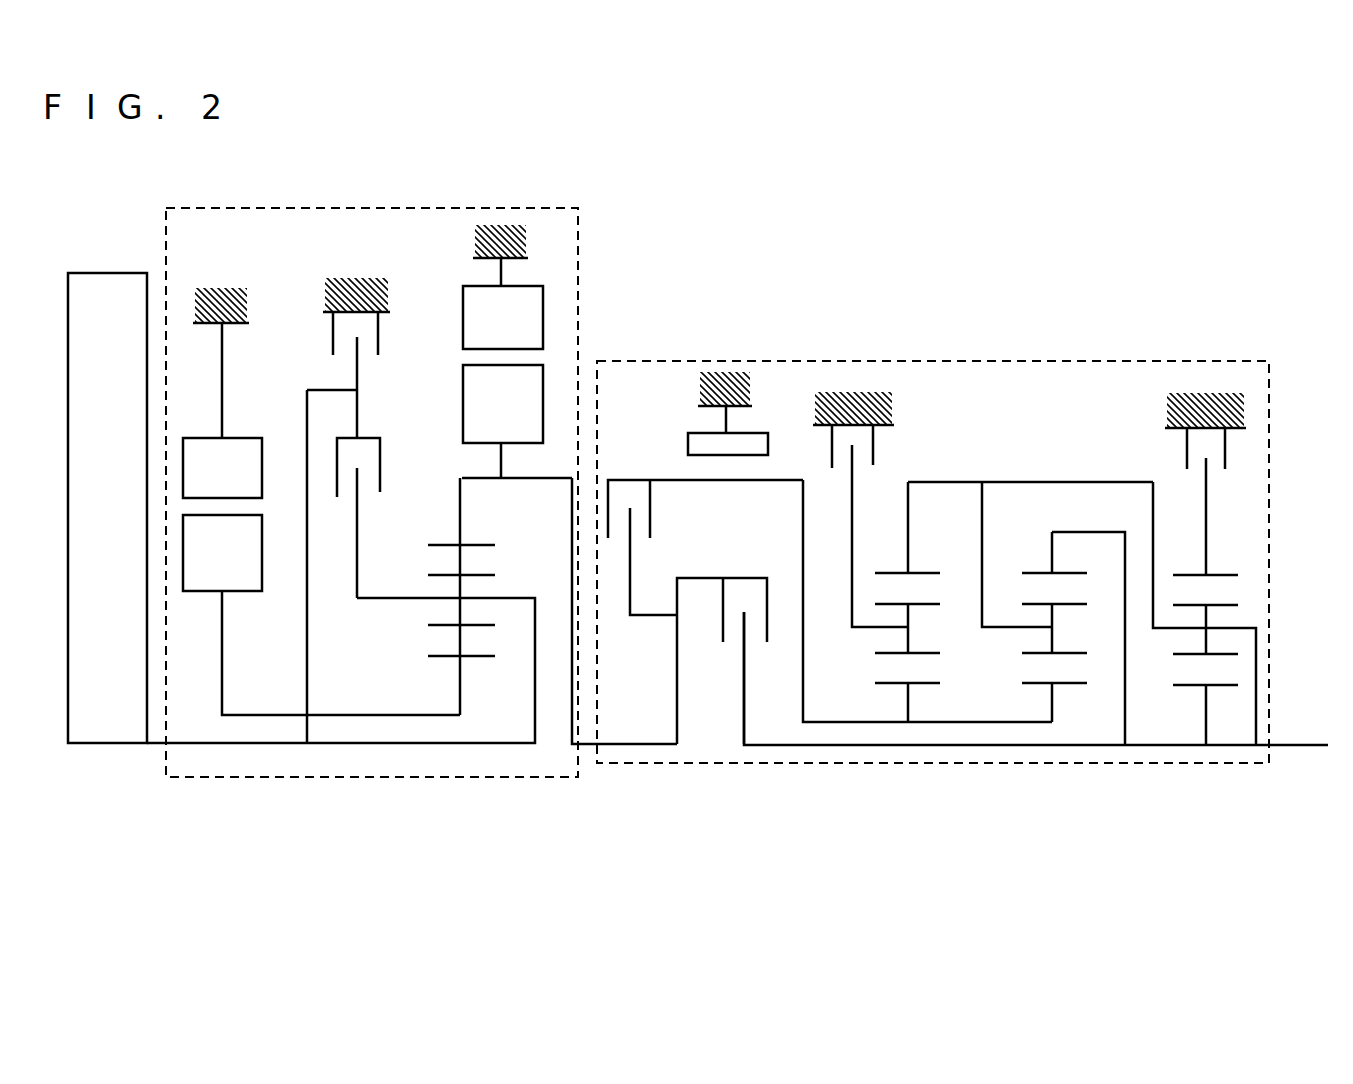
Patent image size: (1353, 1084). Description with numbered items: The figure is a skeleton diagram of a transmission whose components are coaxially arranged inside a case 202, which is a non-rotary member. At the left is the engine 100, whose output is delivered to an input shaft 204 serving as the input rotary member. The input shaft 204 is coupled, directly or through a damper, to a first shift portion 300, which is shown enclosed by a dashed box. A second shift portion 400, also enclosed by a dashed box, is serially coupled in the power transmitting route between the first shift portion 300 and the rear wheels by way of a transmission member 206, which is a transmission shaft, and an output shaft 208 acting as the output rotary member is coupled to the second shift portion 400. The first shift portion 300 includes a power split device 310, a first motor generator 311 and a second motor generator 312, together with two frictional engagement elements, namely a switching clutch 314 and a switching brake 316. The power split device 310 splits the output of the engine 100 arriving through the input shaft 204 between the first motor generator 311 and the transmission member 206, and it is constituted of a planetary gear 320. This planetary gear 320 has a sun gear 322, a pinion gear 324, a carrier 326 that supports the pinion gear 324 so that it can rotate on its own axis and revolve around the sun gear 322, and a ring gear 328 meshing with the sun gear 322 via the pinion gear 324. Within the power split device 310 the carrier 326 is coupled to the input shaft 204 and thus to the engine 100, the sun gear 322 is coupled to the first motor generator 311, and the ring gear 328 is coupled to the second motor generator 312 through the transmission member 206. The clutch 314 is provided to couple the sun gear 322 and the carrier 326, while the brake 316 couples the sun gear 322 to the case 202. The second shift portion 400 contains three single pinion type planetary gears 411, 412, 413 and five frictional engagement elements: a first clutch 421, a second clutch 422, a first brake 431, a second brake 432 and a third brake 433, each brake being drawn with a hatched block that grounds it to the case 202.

The engine 100 is at (105, 745).
The case 202 is at (222, 288).
The input shaft 204 is at (315, 745).
The transmission member 206 is at (583, 745).
The output shaft 208 is at (1292, 747).
The first shift portion 300 is at (280, 205).
The power split device 310 is at (403, 752).
The first MG 311 is at (258, 430).
The second MG 312 is at (552, 295).
The C0 clutch 314 is at (380, 465).
The B0 brake 316 is at (379, 345).
The planetary gear 320 is at (437, 589).
The sun gear 322 is at (450, 652).
The pinion gear 324 is at (442, 624).
The carrier 326 is at (502, 597).
The ring gear 328 is at (468, 548).
The second shift portion 400 is at (1062, 360).
The first planetary gear 411 is at (860, 665).
The second planetary gear 412 is at (1009, 668).
The third planetary gear 413 is at (1159, 671).
The C1 clutch 421 is at (723, 623).
The C2 clutch 422 is at (628, 478).
The B1 brake 431 is at (695, 432).
The B2 brake 432 is at (878, 448).
The B3 brake 433 is at (1227, 450).